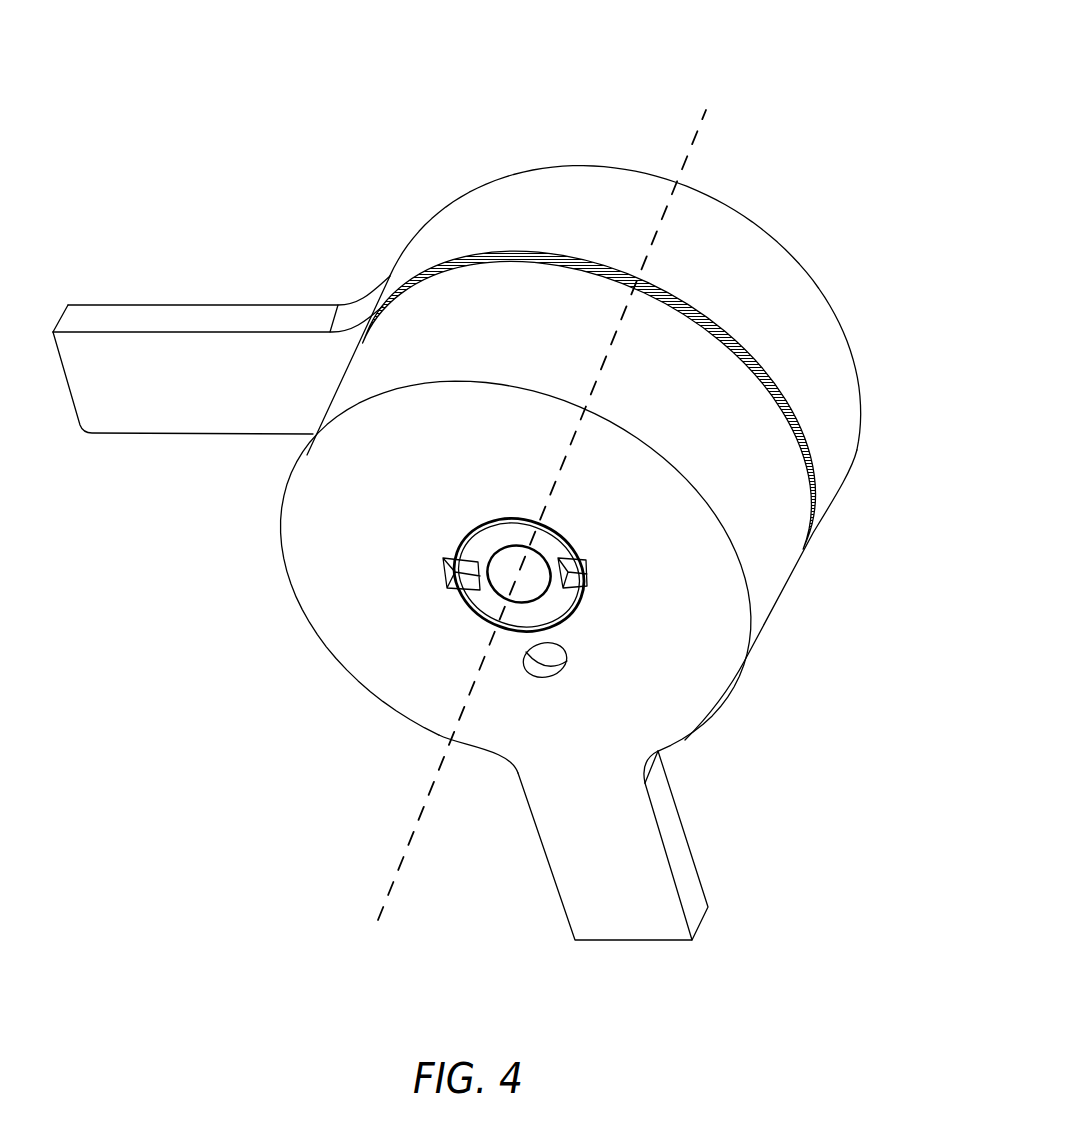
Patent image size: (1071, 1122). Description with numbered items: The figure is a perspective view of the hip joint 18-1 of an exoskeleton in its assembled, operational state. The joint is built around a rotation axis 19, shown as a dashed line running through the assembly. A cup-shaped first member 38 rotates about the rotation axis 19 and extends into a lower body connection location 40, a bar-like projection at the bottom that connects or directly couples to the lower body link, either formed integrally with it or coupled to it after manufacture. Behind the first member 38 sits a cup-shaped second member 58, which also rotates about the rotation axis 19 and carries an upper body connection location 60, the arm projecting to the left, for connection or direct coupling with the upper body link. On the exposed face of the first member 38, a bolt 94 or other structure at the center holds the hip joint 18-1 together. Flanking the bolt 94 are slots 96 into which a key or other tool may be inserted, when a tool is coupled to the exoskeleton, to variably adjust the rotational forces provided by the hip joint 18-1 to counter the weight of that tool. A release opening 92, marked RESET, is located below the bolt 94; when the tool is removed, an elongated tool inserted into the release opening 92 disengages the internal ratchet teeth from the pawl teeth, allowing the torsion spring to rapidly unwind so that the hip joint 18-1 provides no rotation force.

The hip joint 18-1 is at (633, 63).
The rotation axis 19 is at (697, 143).
The first member 38 is at (712, 678).
The lower body connection location 40 is at (688, 888).
The second member 58 is at (783, 287).
The upper body connection location 60 is at (128, 350).
The release opening 92 is at (547, 678).
The bolt 94 is at (538, 572).
The slots 96 is at (445, 573).